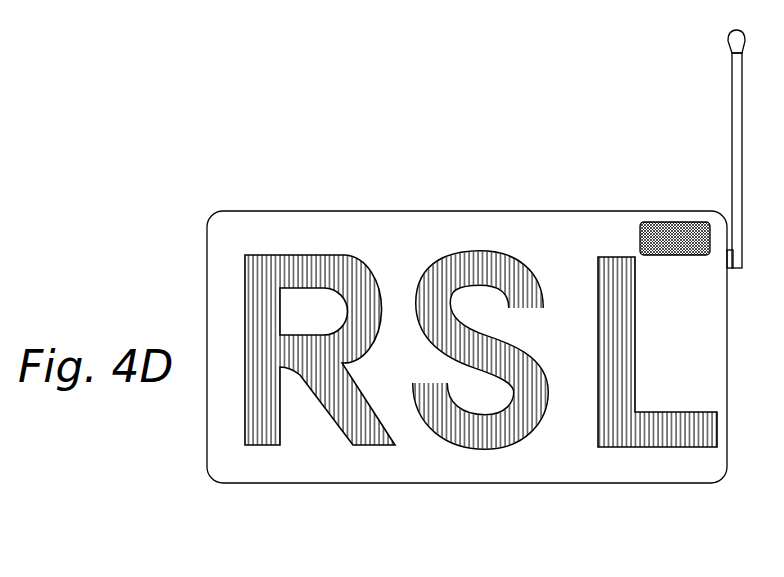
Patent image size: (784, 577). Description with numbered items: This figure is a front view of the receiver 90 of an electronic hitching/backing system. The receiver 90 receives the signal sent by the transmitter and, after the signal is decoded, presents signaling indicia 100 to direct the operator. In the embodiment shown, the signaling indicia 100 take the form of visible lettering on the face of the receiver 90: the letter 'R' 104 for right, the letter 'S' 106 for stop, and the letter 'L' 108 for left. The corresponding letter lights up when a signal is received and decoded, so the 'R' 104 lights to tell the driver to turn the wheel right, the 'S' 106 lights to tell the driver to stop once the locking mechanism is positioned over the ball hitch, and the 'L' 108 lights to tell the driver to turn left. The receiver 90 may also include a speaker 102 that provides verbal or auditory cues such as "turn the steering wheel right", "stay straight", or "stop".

The receiver 90 is at (341, 216).
The signaling indicia 100 is at (246, 459).
The speaker 102 is at (660, 222).
The 'R' lettering 104 is at (364, 448).
The 'S' lettering 106 is at (483, 448).
The 'L' lettering 108 is at (658, 448).